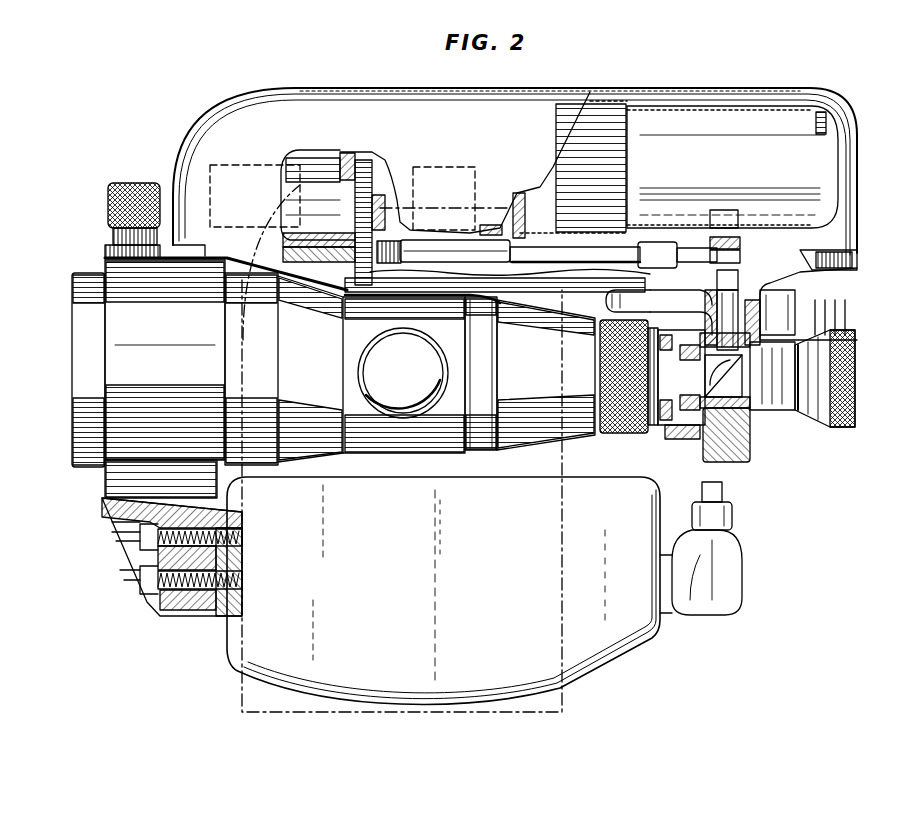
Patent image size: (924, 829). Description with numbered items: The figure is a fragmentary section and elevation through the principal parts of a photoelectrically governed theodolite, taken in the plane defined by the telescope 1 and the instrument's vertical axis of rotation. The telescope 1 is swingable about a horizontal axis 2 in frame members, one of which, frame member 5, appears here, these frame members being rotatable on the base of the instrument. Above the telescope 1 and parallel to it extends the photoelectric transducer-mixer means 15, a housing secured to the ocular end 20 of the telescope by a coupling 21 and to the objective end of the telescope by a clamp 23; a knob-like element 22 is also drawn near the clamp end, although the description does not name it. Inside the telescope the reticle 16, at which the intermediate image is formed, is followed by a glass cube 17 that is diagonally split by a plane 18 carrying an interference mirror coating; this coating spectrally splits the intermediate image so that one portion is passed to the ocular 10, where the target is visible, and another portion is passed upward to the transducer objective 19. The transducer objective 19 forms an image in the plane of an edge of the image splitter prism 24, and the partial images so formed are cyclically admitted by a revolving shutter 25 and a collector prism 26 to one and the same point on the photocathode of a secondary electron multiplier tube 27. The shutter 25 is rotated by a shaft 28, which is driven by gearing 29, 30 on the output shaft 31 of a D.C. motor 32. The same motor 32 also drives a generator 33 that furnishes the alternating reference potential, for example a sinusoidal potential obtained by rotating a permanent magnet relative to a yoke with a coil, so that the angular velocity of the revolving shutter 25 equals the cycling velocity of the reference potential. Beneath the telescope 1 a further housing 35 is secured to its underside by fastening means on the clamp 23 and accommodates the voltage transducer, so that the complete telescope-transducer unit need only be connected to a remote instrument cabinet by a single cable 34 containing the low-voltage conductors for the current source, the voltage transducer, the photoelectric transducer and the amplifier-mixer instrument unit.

The telescope 1 is at (78, 355).
The horizontal axis 2 is at (445, 372).
The frame member 5 is at (552, 695).
The ocular 10 is at (845, 368).
The photoelectric transducer-mixer means 15 is at (273, 105).
The reticle 16 is at (660, 420).
The glass cube 17 is at (735, 380).
The plane 18 is at (752, 430).
The transducer objective 19 is at (758, 312).
The ocular end 20 is at (684, 445).
The coupling 21 is at (676, 326).
The adjusting knob 22 is at (108, 205).
The clamp 23 is at (118, 280).
The image splitter prism 24 is at (738, 280).
The revolving shutter 25 is at (738, 259).
The collector prism 26 is at (715, 225).
The secondary electron multiplier tube 27 is at (825, 130).
The shaft 28 is at (570, 255).
The gearing 29 is at (357, 280).
The gearing 30 is at (375, 170).
The output shaft 31 is at (388, 185).
The D.C. motor 32 is at (310, 170).
The generator 33 is at (455, 178).
The cable 34 is at (725, 492).
The housing 35 is at (437, 685).